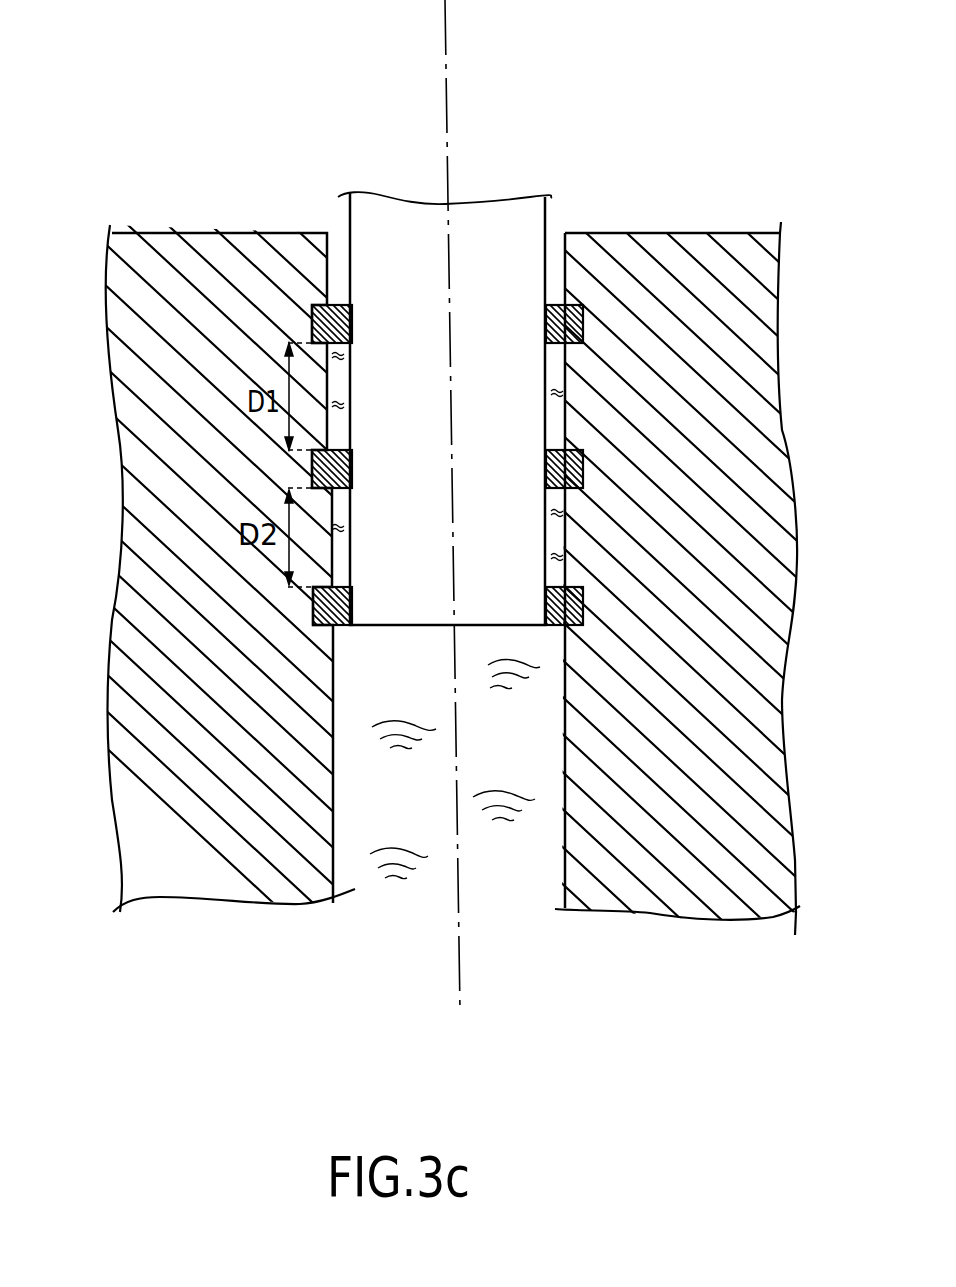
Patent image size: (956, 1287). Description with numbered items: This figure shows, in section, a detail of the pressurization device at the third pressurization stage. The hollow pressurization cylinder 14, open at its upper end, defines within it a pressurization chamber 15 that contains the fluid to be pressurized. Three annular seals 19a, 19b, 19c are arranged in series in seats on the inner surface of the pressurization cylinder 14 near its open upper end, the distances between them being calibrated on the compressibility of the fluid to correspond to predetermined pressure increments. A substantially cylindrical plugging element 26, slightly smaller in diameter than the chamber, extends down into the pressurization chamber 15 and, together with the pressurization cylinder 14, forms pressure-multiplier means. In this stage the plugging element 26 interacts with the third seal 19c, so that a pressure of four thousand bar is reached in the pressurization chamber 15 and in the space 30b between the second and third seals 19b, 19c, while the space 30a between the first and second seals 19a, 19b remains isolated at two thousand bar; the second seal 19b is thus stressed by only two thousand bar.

The pressurization cylinder 14 is at (732, 323).
The pressurization chamber 15 is at (507, 773).
The plugging element 26 is at (523, 226).
The first annular seal 19a is at (312, 303).
The second annular seal 19b is at (310, 466).
The third annular seal 19c is at (310, 600).
The space between first and second seals 30a is at (553, 417).
The space between second and third seals 30b is at (555, 540).